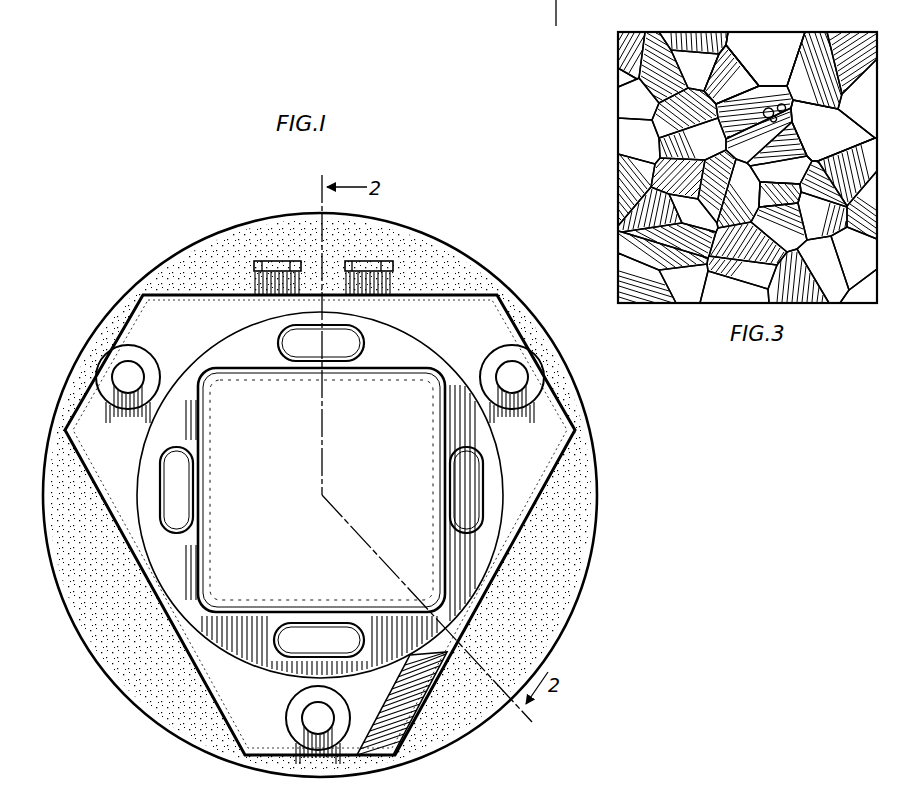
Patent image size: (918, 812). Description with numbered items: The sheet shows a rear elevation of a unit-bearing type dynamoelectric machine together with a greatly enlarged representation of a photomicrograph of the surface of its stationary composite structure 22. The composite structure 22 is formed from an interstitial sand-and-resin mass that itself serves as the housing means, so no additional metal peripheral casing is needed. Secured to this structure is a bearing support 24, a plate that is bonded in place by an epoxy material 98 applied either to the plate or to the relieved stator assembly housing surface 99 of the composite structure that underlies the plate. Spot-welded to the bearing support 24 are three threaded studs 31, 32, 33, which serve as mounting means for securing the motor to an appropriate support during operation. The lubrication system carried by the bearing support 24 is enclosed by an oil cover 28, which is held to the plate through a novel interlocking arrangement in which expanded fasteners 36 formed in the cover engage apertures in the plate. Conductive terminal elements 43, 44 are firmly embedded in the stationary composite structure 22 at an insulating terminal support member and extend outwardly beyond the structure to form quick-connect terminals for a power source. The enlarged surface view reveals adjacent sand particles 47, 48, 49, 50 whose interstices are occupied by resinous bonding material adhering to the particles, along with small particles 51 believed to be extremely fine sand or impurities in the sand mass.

In FIG. 1, the stationary composite structure 22 is at (575, 519).
In FIG. 1, the bearing support 24 is at (560, 428).
In FIG. 1, the oil cover 28 is at (205, 374).
In FIG. 1, the threaded stud 31 is at (121, 376).
In FIG. 1, the threaded stud 32 is at (518, 378).
In FIG. 1, the threaded stud 33 is at (315, 718).
In FIG. 1, the expanded fastener 36 is at (358, 336).
In FIG. 1, the conductive terminal element 43 is at (273, 265).
In FIG. 1, the conductive terminal element 44 is at (370, 265).
In FIG. 1, the epoxy material 98 is at (428, 710).
In FIG. 1, the relieved stator assembly housing surface 99 is at (556, 25).
In FIG. 3, the sand particle 47 is at (838, 103).
In FIG. 3, the sand particle 48 is at (803, 147).
In FIG. 3, the sand particle 49 is at (754, 76).
In FIG. 3, the sand particle 50 is at (802, 46).
In FIG. 3, the small particle 51 is at (786, 104).